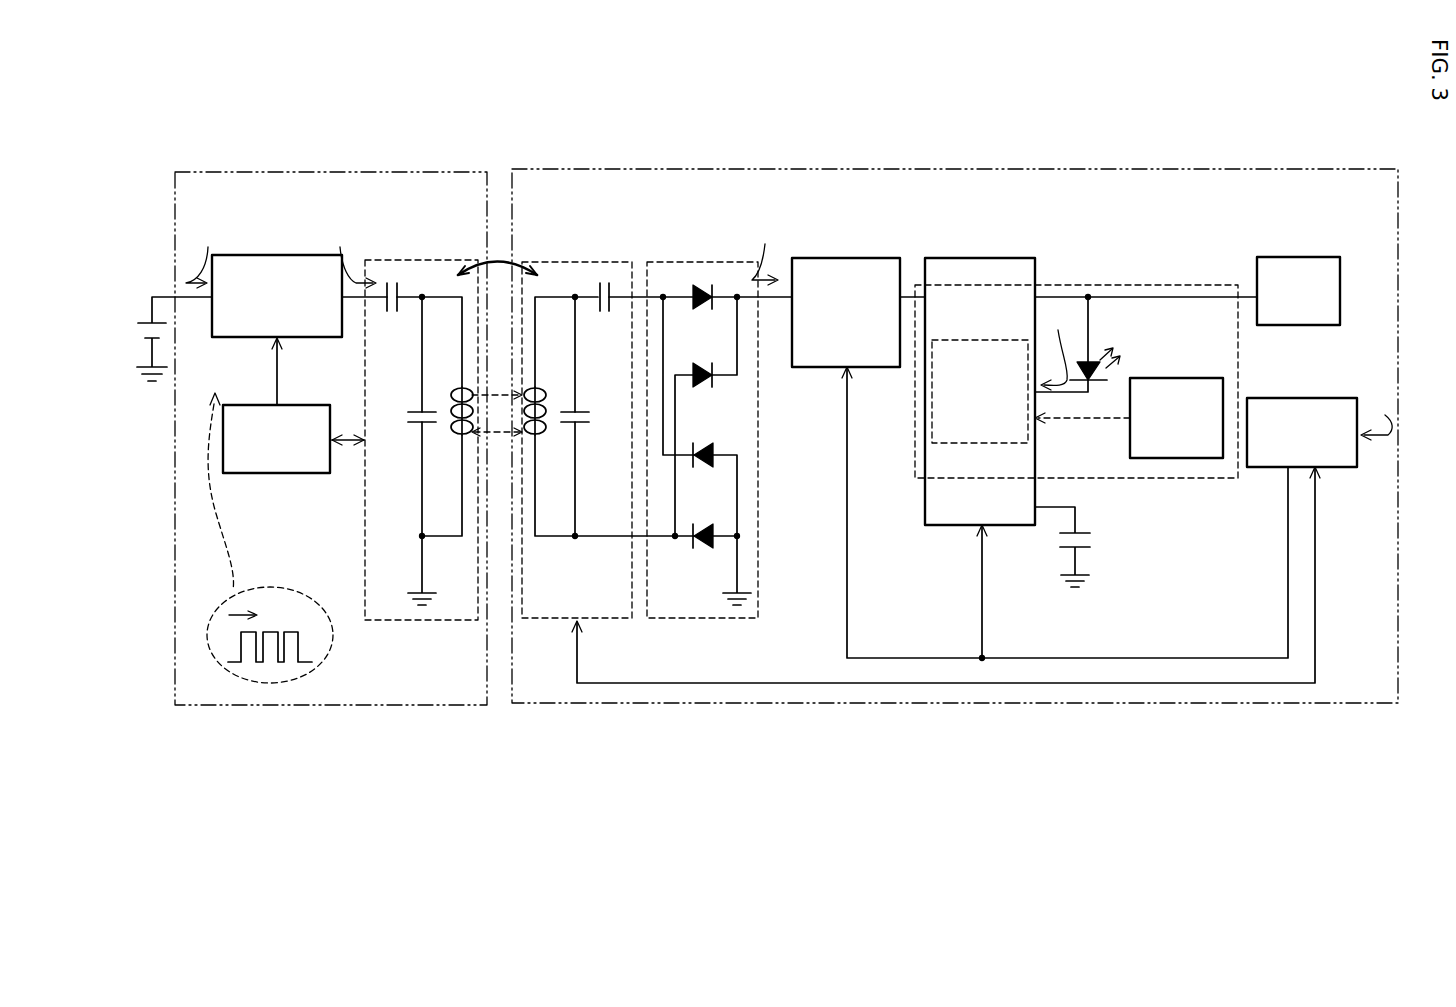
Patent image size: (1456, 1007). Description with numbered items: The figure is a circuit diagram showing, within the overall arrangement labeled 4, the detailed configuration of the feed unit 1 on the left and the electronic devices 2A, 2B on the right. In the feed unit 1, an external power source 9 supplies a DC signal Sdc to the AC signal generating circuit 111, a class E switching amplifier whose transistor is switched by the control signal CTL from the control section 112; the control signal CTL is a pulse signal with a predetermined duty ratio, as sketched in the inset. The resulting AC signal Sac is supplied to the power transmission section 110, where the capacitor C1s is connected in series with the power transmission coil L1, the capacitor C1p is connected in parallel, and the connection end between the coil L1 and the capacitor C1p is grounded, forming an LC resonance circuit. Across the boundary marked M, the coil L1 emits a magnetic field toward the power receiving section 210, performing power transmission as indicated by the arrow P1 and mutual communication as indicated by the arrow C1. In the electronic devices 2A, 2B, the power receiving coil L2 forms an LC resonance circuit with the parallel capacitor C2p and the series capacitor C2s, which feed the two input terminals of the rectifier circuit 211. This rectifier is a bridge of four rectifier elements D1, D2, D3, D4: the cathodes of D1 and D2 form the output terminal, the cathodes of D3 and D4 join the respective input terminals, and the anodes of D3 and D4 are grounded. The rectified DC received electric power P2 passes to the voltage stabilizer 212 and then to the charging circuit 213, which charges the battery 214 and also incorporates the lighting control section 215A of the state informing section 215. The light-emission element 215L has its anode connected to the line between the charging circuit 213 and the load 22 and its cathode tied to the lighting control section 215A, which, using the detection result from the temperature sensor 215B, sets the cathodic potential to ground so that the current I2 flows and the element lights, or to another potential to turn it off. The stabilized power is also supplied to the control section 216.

The feed system 4 is at (1206, 90).
The feed unit 1 is at (318, 172).
The external power source 9 is at (150, 296).
The AC signal generating circuit 111 is at (283, 256).
The control section 112 is at (305, 405).
The power transmission section 110 is at (425, 258).
The DC signal Sdc is at (206, 252).
The AC signal Sac is at (348, 252).
The control signal CTL is at (273, 375).
The capacitor C1s is at (388, 328).
The capacitor C1p is at (416, 425).
The power transmission coil L1 is at (452, 440).
The mutual inductance (coupling) M is at (497, 262).
The power transmission P1 is at (497, 374).
The mutual communication C1 is at (497, 455).
The electronic device 2A is at (945, 169).
The electronic device 2B is at (955, 421).
The power receiving section 210 is at (577, 260).
The capacitor C2s is at (608, 328).
The capacitor C2p is at (585, 423).
The power receiving coil L2 is at (545, 440).
The rectifier circuit 211 is at (703, 260).
The rectifier element D1 is at (702, 309).
The rectifier element D2 is at (702, 388).
The rectifier element D3 is at (702, 468).
The rectifier element D4 is at (702, 549).
The received electric power P2 is at (1376, 495).
The voltage stabilizer 212 is at (875, 258).
The charging circuit 213 is at (1000, 258).
The state informing section 215 is at (1128, 284).
The lighting control section 215A is at (975, 340).
The light-emission element 215L is at (1108, 369).
The temperature sensor 215B is at (1130, 440).
The current I2 is at (1054, 346).
The battery 214 is at (1099, 546).
The load 22 is at (1300, 257).
The control section 216 is at (1330, 398).